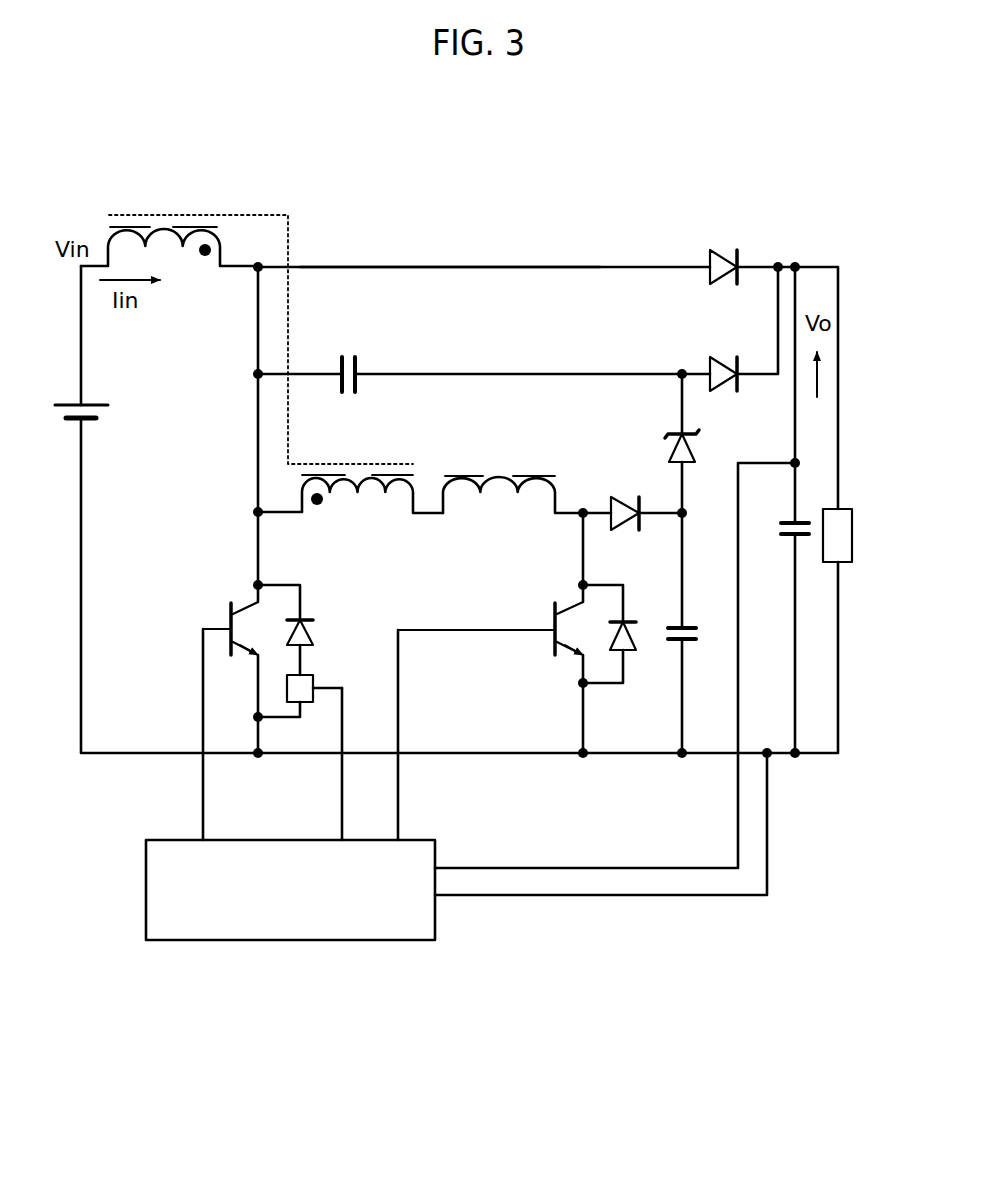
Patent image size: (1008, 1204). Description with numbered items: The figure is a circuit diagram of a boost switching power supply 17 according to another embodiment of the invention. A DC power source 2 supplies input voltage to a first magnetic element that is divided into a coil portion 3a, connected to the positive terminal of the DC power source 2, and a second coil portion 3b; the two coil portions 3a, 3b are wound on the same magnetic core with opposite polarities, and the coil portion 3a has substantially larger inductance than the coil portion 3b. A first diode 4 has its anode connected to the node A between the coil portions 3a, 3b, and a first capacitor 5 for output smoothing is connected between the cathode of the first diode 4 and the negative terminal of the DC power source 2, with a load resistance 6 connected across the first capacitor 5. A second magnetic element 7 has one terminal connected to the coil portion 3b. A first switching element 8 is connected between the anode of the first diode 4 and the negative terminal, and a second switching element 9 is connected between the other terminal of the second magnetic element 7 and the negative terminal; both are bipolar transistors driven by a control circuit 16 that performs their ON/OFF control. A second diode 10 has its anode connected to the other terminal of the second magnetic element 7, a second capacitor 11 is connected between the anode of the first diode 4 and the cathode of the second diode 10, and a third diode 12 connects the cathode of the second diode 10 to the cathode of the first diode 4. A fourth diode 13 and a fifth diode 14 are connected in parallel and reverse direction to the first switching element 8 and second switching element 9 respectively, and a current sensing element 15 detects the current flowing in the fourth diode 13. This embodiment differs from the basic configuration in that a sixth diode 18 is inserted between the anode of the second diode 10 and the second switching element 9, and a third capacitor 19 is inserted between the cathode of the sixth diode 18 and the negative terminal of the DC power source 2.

The input node A is at (348, 265).
The DC power source 2 is at (100, 405).
The coil portion 3a is at (173, 213).
The second coil portion 3b is at (347, 463).
The first diode 4 is at (728, 250).
The first capacitor 5 is at (783, 536).
The load resistance 6 is at (852, 530).
The second magnetic element 7 is at (483, 477).
The first switching element 8 is at (228, 612).
The second switching element 9 is at (540, 607).
The second diode 10 is at (696, 450).
The second capacitor 11 is at (358, 363).
The third diode 12 is at (718, 357).
The fourth diode 13 is at (302, 620).
The fifth diode 14 is at (635, 620).
The current sensing element 15 is at (307, 672).
The control circuit 16 is at (435, 825).
The boost switching power supply 17 is at (592, 914).
The sixth diode 18 is at (612, 497).
The third capacitor 19 is at (693, 641).